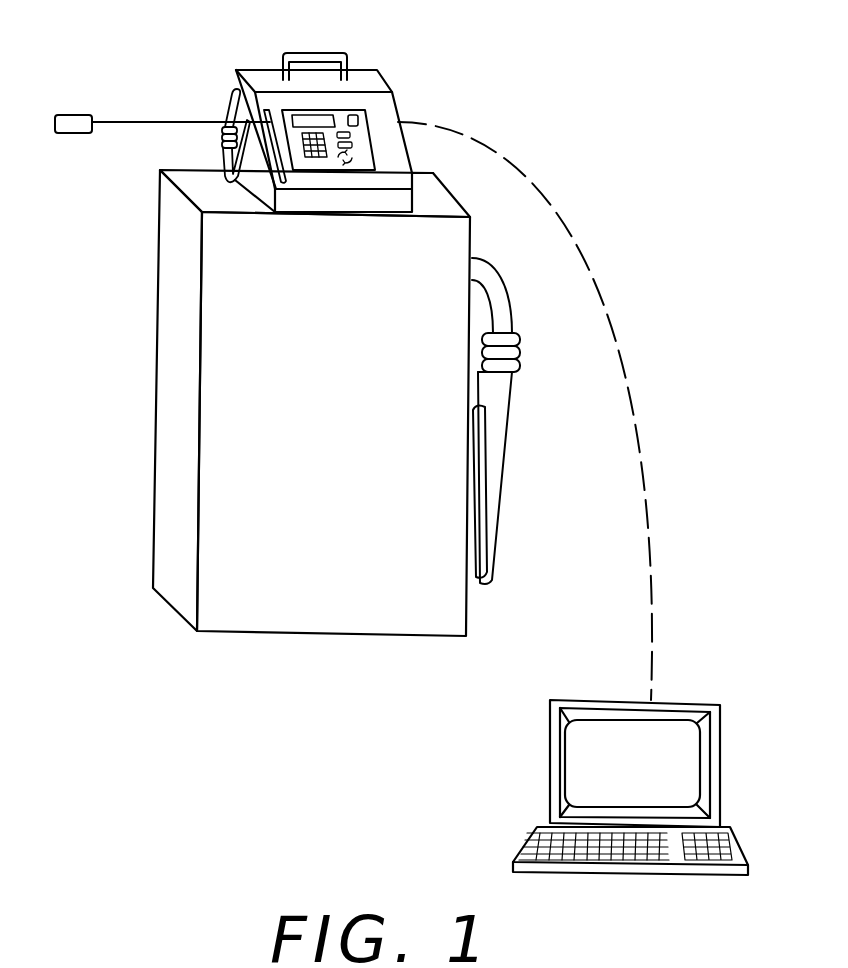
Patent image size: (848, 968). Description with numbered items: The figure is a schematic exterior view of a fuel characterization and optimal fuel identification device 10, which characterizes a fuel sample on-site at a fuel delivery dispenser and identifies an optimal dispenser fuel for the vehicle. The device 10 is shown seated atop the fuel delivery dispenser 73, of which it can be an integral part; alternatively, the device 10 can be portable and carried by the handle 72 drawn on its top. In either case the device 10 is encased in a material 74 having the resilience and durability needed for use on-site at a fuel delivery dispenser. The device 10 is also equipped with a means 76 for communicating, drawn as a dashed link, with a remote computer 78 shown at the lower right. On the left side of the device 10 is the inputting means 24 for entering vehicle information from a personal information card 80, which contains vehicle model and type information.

The fuel characterization and optimal fuel identification device 10 is at (334, 117).
The inputting means 24 is at (238, 92).
The handle 72 is at (322, 53).
The fuel delivery dispenser 73 is at (253, 355).
The material 74 is at (272, 83).
The means for communicating 76 is at (590, 280).
The remote computer 78 is at (720, 745).
The personal information card 80 is at (80, 113).